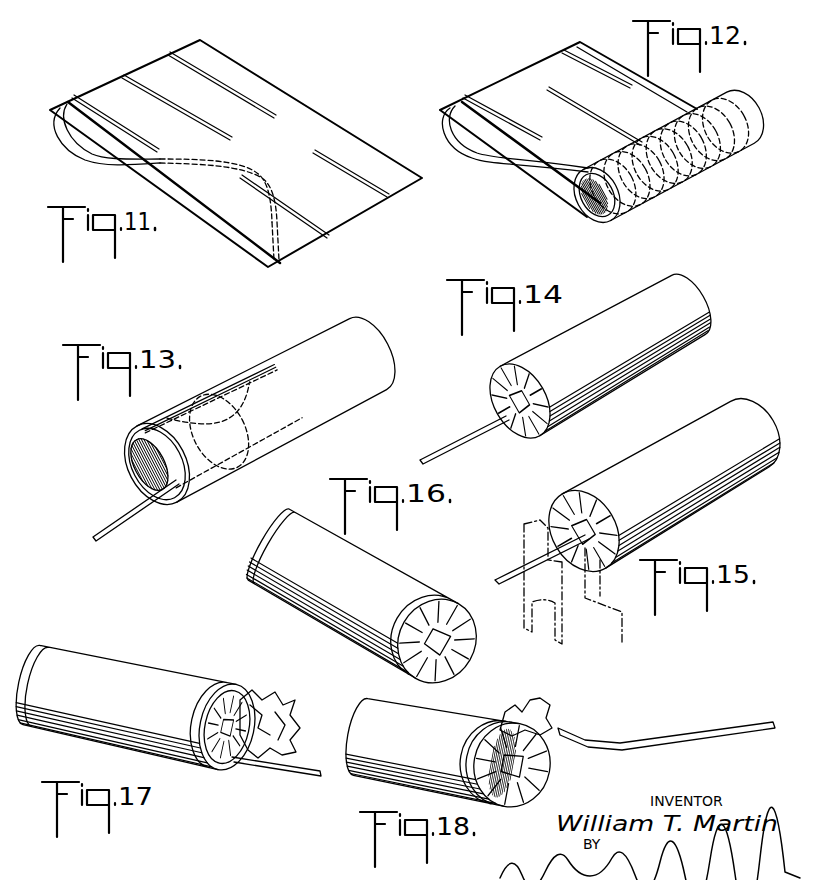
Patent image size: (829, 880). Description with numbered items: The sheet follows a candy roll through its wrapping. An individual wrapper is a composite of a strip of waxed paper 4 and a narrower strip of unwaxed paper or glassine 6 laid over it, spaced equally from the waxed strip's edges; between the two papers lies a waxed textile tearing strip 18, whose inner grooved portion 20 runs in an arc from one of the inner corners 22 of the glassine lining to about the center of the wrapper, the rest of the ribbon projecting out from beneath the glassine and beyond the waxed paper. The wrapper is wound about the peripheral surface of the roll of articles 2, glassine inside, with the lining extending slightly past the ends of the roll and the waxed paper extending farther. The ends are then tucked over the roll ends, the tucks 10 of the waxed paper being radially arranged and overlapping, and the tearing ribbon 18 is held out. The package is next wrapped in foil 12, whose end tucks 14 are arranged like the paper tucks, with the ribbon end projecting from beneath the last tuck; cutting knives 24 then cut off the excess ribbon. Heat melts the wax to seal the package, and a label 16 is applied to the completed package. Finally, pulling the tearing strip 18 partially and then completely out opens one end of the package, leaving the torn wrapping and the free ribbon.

In FIG. 12, the stack or roll of articles 2 is at (702, 162).
In FIG. 11, the strip of waxed paper 4 is at (256, 84).
In FIG. 12, the strip of waxed paper 4 is at (592, 43).
In FIG. 13, the strip of waxed paper 4 is at (127, 448).
In FIG. 11, the strip of unwaxed paper or glassine 6 is at (351, 158).
In FIG. 13, the strip of unwaxed paper or glassine 6 is at (132, 470).
In FIG. 14, the tucks of the waxed paper wrapper 10 is at (521, 440).
In FIG. 15, the foil 12 is at (594, 481).
In FIG. 15, the end tucks of the foil wrapper 14 is at (572, 511).
In FIG. 16, the label 16 is at (418, 578).
In FIG. 11, the tearing strip 18 is at (92, 162).
In FIG. 13, the tearing strip 18 is at (125, 516).
In FIG. 14, the tearing strip 18 is at (454, 440).
In FIG. 17, the tearing strip 18 is at (284, 768).
In FIG. 18, the tearing strip 18 is at (674, 730).
In FIG. 11, the inner grooved portion of the tearing ribbon 20 is at (261, 182).
In FIG. 13, the inner grooved portion of the tearing ribbon 20 is at (233, 474).
In FIG. 11, the inner corners of the glassine lining 22 is at (280, 262).
In FIG. 15, the cutting knives 24 is at (522, 541).